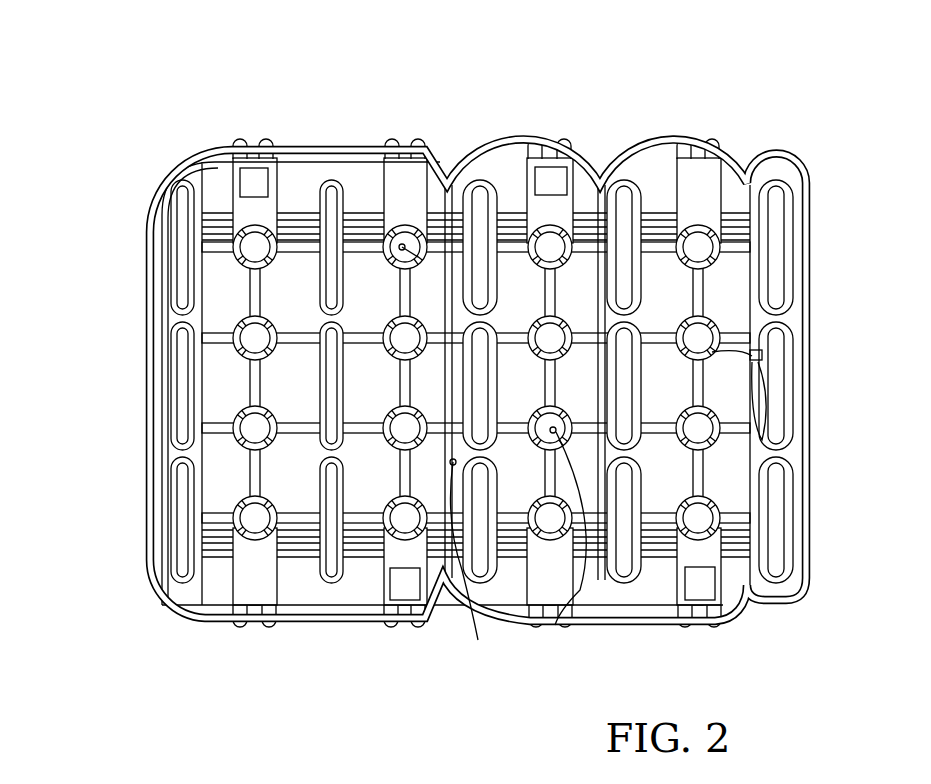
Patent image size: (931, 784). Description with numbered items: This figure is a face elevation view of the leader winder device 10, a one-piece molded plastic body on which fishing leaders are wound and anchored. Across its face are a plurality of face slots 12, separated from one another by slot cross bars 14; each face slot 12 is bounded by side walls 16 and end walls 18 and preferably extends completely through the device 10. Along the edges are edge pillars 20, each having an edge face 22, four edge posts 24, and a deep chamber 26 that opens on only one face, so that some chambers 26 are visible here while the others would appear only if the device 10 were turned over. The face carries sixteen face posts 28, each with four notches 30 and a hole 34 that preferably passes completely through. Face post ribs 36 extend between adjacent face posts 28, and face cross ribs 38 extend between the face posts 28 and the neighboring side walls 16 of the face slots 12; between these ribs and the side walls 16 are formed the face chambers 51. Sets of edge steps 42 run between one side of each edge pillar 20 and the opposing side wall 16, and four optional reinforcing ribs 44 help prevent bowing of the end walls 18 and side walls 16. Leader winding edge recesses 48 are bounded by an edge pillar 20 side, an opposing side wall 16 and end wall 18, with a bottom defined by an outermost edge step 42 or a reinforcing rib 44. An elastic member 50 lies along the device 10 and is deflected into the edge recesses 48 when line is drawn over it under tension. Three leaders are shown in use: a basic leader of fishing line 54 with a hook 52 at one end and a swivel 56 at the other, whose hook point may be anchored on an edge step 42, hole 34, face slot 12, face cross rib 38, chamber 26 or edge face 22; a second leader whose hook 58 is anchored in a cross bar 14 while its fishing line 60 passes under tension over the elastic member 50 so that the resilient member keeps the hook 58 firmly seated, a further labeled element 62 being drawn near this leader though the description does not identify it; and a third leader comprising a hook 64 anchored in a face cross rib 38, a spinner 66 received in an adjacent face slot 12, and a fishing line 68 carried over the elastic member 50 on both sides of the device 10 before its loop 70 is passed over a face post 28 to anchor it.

The leader winder device 10 is at (773, 104).
The face slot 12 is at (172, 265).
The slot cross bar 14 is at (176, 335).
The side wall 16 is at (188, 250).
The end wall 18 is at (160, 193).
The edge pillar 20 is at (228, 158).
The edge face 22 is at (256, 172).
The edge post 24 is at (240, 142).
The deep chamber 26 is at (284, 165).
The face post 28 is at (212, 230).
The notch 30 is at (250, 236).
The hole 34 is at (215, 182).
The face post rib 36 is at (190, 280).
The face cross rib 38 is at (305, 195).
The edge step 42 is at (167, 185).
The reinforcing rib 44 is at (222, 215).
The leader winding edge recess 48 is at (238, 232).
The elastic member 50 is at (215, 614).
The face chamber 51 is at (476, 382).
The hook 52 is at (455, 540).
The fishing line 54 is at (440, 278).
The swivel 56 is at (398, 243).
The hook 58 is at (635, 155).
The fishing line 60 is at (598, 290).
The cord 62 is at (518, 600).
The hook 64 is at (760, 440).
The spinner 66 is at (766, 380).
The fishing line 68 is at (752, 265).
The loop 70 is at (748, 340).